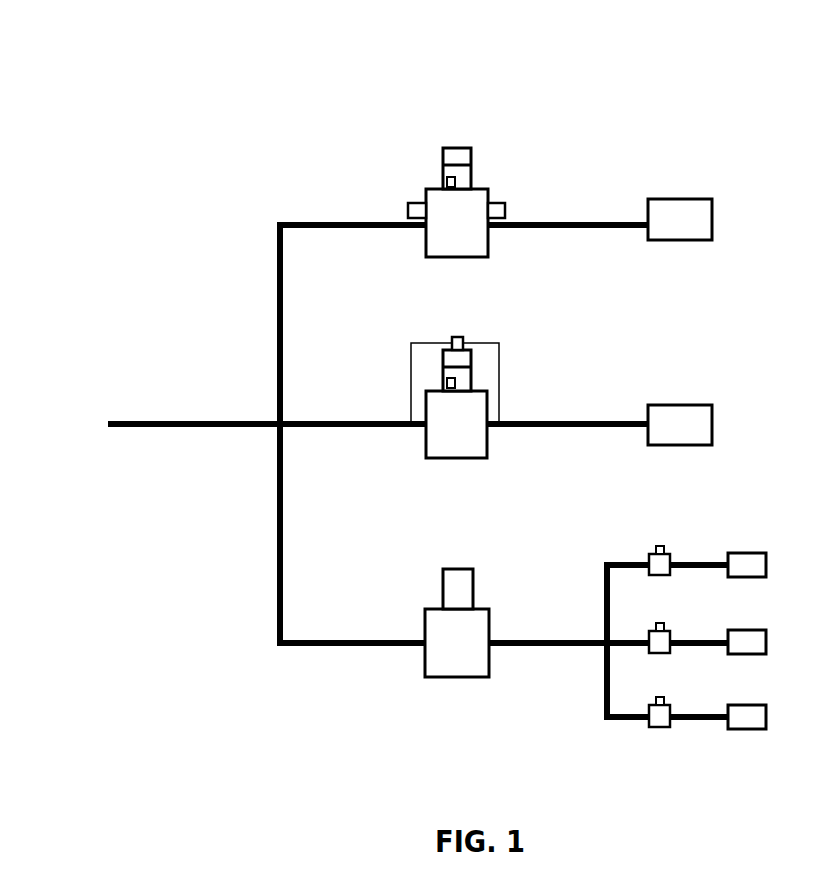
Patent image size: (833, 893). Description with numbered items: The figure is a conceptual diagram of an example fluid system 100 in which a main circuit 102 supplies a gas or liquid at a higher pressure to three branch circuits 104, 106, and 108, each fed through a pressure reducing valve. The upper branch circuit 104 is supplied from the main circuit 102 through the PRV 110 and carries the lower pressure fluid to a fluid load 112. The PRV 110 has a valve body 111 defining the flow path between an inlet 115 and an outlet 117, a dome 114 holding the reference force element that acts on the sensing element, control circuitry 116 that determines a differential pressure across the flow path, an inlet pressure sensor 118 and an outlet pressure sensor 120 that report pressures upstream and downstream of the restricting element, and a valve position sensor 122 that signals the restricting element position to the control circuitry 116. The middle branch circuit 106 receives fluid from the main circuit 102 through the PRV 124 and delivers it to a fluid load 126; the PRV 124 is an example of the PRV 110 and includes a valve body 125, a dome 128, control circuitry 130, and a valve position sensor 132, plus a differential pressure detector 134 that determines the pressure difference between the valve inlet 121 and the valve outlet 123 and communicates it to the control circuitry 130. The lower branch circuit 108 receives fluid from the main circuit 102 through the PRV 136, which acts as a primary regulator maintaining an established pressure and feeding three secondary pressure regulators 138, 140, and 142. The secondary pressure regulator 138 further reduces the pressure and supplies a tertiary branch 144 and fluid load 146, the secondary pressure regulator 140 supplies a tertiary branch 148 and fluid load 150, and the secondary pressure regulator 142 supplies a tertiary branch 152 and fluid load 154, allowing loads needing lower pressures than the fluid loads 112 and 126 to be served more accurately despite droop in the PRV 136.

The fluid system 100 is at (209, 78).
The main circuit 102 is at (185, 422).
The branch circuit 104 is at (570, 222).
The branch circuit 106 is at (570, 422).
The branch circuit 108 is at (571, 640).
The PRV 110 is at (458, 114).
The valve body 111 is at (465, 207).
The fluid load 112 is at (692, 198).
The dome 114 is at (465, 178).
The inlet 115 is at (420, 228).
The control circuitry 116 is at (460, 152).
The outlet 117 is at (492, 228).
The inlet pressure sensor 118 is at (416, 210).
The outlet pressure sensor 120 is at (498, 210).
The valve inlet 121 is at (420, 428).
The valve position sensor 122 is at (457, 223).
The valve outlet 123 is at (492, 428).
The PRV 124 is at (466, 334).
The valve body 125 is at (455, 459).
The fluid load 126 is at (692, 404).
The dome 128 is at (465, 380).
The control circuitry 130 is at (448, 357).
The valve position sensor 132 is at (456, 424).
The differential pressure detector 134 is at (457, 337).
The PRV 136 is at (463, 558).
The secondary pressure regulator 138 is at (658, 546).
The secondary pressure regulator 140 is at (658, 623).
The secondary pressure regulator 142 is at (658, 697).
The tertiary branch 144 is at (688, 564).
The fluid load 146 is at (755, 553).
The tertiary branch 148 is at (688, 642).
The fluid load 150 is at (755, 630).
The tertiary branch 152 is at (688, 716).
The fluid load 154 is at (755, 705).